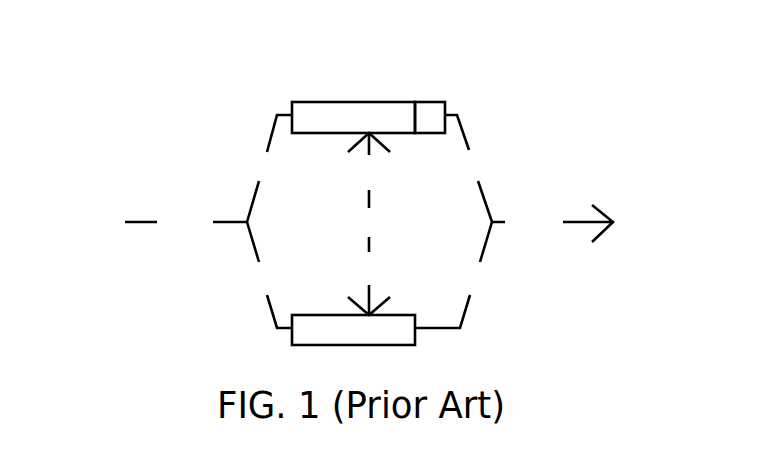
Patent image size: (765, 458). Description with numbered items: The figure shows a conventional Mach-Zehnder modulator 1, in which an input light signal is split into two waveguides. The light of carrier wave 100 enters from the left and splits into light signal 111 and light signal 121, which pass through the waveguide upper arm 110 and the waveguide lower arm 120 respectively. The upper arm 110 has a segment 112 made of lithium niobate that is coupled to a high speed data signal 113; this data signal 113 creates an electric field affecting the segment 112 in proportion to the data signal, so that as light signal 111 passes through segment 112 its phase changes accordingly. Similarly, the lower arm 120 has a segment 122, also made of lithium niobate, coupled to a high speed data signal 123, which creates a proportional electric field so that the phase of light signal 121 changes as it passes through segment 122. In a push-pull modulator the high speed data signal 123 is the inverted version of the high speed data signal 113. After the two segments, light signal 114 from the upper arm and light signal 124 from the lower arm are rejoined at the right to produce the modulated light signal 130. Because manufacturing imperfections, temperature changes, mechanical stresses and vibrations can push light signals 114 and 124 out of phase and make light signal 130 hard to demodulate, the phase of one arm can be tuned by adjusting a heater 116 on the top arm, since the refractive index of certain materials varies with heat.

The Mach-Zehnder modulator 1 is at (260, 78).
The carrier wave 100 is at (186, 222).
The waveguide upper arm 110 is at (217, 162).
The light signal 111 is at (269, 168).
The segment 112 is at (353, 117).
The high speed data signal 113 is at (370, 170).
The light signal 114 is at (472, 168).
The heater 116 is at (455, 98).
The waveguide lower arm 120 is at (220, 285).
The light signal 121 is at (269, 275).
The segment 122 is at (353, 330).
The high speed data signal 123 is at (370, 276).
The light signal 124 is at (458, 275).
The modulated light signal 130 is at (552, 223).